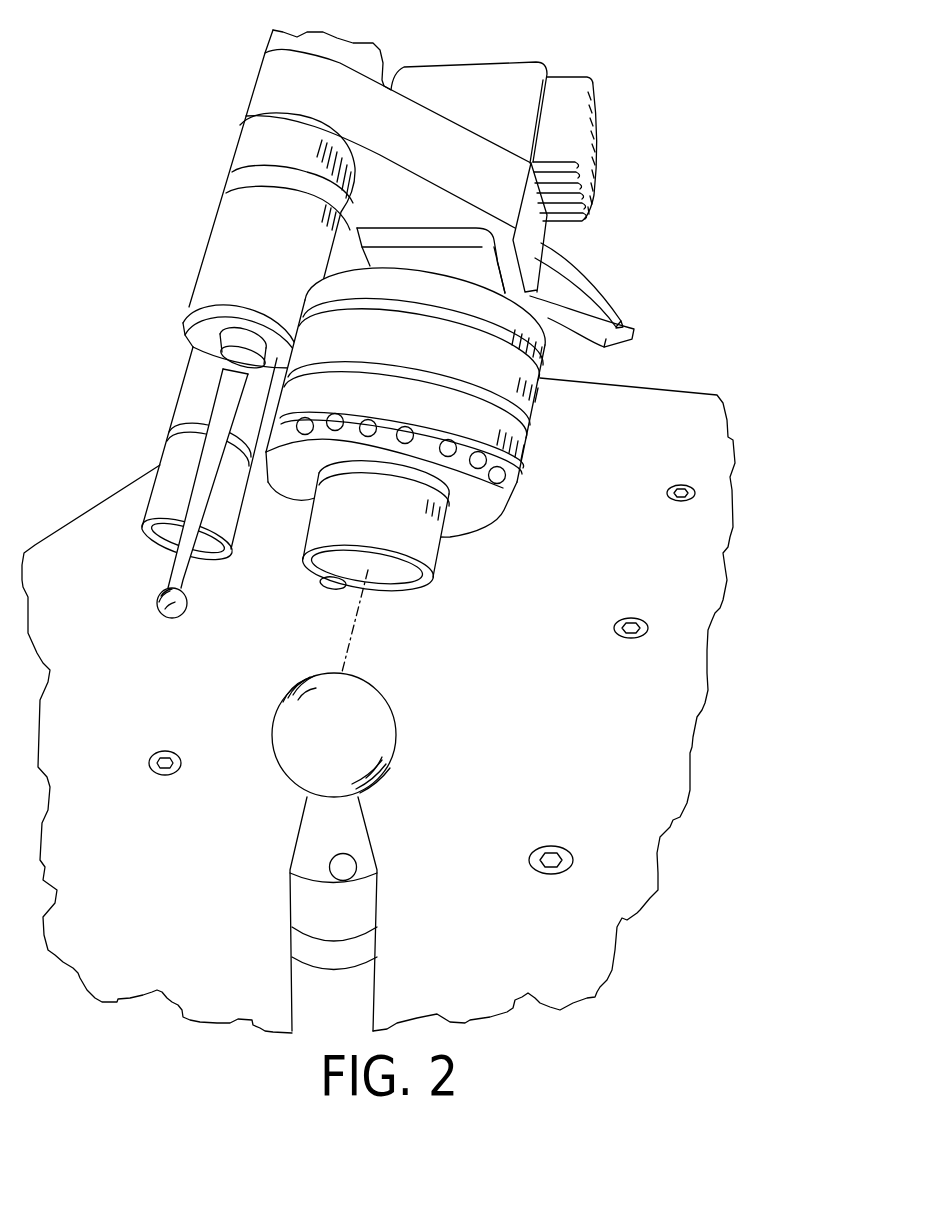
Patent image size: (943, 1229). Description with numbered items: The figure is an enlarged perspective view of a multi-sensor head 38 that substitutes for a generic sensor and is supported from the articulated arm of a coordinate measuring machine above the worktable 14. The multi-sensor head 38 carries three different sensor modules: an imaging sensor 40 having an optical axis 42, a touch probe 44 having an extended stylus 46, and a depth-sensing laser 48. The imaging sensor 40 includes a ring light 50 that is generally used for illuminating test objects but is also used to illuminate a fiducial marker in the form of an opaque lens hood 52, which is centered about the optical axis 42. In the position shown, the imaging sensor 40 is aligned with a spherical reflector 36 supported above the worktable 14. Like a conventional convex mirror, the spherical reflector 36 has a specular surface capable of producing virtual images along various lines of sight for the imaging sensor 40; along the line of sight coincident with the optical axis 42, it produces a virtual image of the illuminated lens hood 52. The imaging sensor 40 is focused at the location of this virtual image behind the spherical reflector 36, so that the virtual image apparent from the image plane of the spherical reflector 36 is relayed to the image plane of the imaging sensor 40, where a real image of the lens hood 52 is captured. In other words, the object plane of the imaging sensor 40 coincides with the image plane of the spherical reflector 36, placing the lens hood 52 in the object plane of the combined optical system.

The worktable 14 is at (640, 758).
The spherical reflector 36 is at (298, 686).
The multi-sensor head 38 is at (233, 89).
The imaging sensor 40 is at (540, 407).
The optical axis 42 is at (355, 622).
The touch probe 44 is at (222, 242).
The extended stylus 46 is at (157, 611).
The depth-sensing laser 48 is at (170, 508).
The ring light 50 is at (480, 517).
The opaque lens hood 52 is at (440, 572).